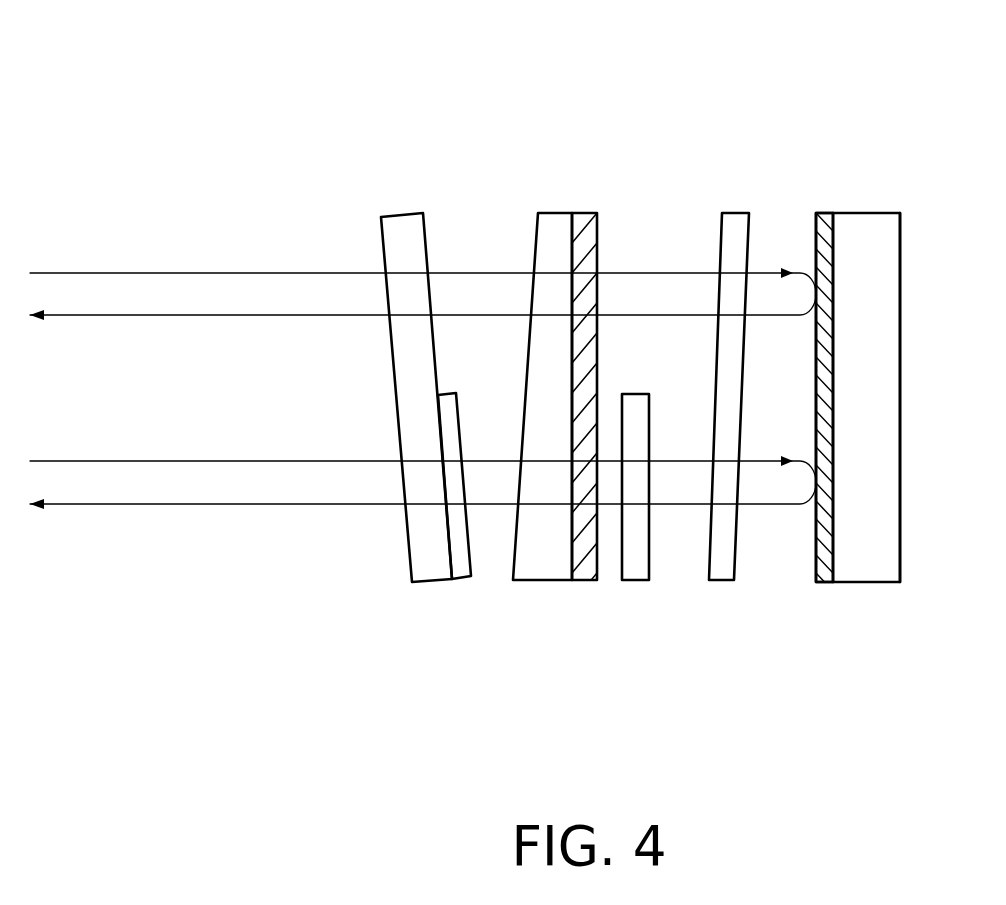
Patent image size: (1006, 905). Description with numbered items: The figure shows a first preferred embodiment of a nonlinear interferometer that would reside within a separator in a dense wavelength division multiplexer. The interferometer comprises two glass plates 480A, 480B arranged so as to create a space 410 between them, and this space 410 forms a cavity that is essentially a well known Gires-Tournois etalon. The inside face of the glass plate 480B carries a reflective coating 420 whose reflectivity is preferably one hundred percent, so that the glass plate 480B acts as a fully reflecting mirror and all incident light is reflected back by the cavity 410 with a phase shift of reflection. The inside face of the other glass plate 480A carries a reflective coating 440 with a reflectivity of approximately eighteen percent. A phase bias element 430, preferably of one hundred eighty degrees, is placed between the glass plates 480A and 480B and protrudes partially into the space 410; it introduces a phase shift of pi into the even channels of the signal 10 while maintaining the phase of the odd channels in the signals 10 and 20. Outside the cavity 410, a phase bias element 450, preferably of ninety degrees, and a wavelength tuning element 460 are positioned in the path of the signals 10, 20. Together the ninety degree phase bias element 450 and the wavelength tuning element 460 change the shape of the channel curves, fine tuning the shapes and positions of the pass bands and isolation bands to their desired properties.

The signal 10 is at (130, 461).
The signal 20 is at (133, 273).
The space 410 is at (873, 328).
The reflective coating 420 is at (827, 328).
The phase bias element 430 is at (637, 583).
The reflective coating 440 is at (585, 213).
The phase bias element 450 is at (728, 52).
The wavelength tuning element 460 is at (723, 582).
The glass plate 480A is at (550, 213).
The glass plate 480B is at (873, 213).